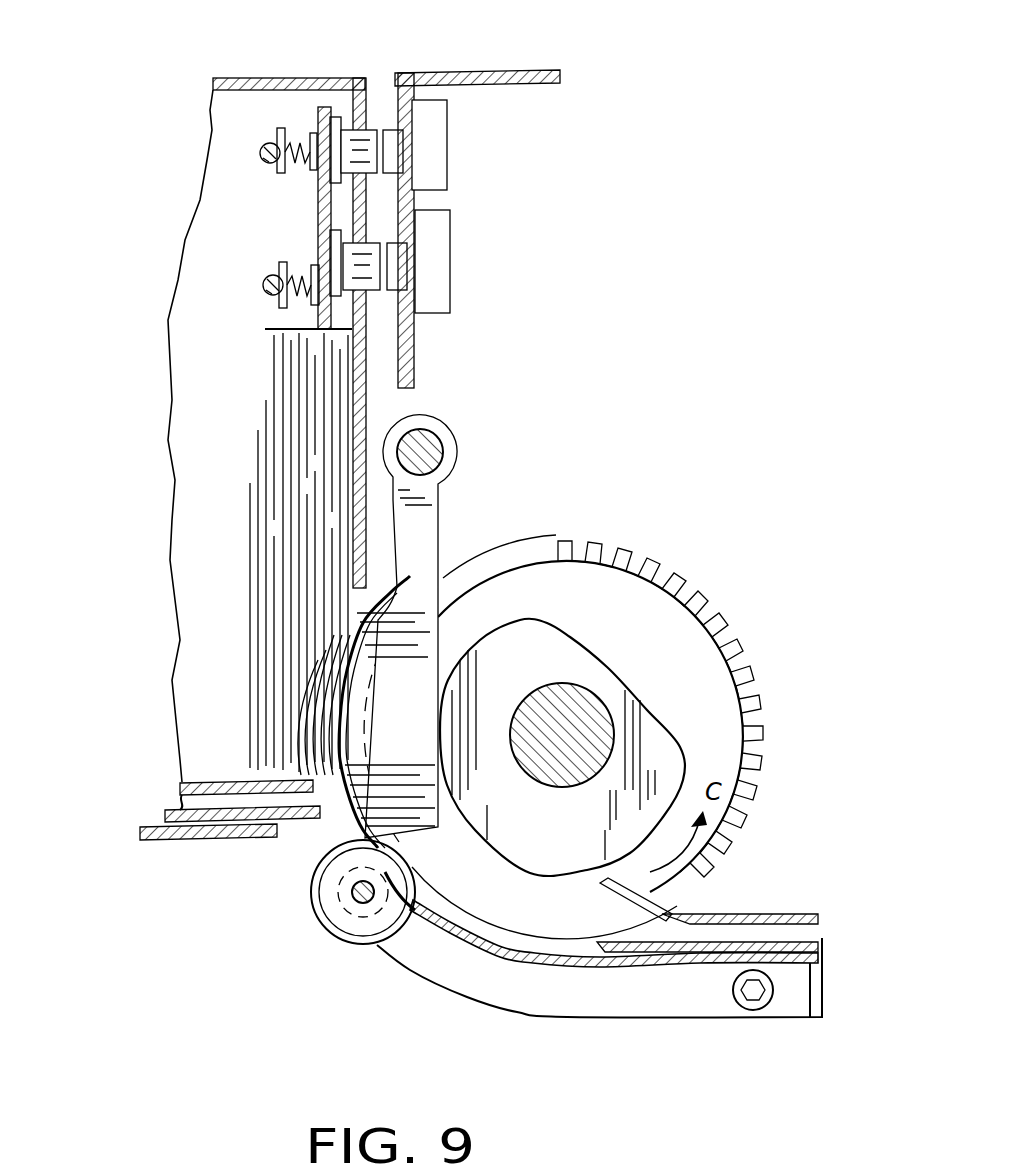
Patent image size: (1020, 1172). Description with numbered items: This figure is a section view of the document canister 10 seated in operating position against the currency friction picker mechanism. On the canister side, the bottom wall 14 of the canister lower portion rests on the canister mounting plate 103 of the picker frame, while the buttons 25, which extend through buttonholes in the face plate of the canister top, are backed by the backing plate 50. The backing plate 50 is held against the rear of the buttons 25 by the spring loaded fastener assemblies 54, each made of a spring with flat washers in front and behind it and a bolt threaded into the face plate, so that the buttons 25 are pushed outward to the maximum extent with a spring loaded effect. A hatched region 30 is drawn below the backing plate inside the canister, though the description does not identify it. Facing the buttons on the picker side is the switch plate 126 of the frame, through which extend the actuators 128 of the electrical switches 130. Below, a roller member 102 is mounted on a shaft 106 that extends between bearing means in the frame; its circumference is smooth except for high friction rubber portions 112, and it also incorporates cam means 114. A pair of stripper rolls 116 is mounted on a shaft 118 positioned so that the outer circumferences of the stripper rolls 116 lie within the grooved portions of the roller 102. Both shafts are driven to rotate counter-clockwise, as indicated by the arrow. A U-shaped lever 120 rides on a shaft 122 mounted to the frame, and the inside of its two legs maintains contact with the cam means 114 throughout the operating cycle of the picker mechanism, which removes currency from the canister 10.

The document canister 10 is at (236, 55).
The bottom wall 14 is at (178, 800).
The buttons 25 is at (370, 130).
The diaphragm 30 is at (303, 402).
The backing plate 50 is at (328, 194).
The spring loaded fastener assemblies 54 is at (270, 140).
The roller member 102 is at (627, 717).
The canister mounting plate 103 is at (190, 840).
The shaft 106 is at (553, 710).
The high friction rubber portions 112 is at (637, 560).
The cam means 114 is at (612, 662).
The stripper rolls 116 is at (311, 905).
The shaft 118 is at (363, 904).
The U-shaped lever 120 is at (440, 533).
The shaft 122 is at (441, 432).
The switch plate 126 is at (417, 338).
The actuators 128 is at (390, 130).
The electrical switches 130 is at (432, 138).